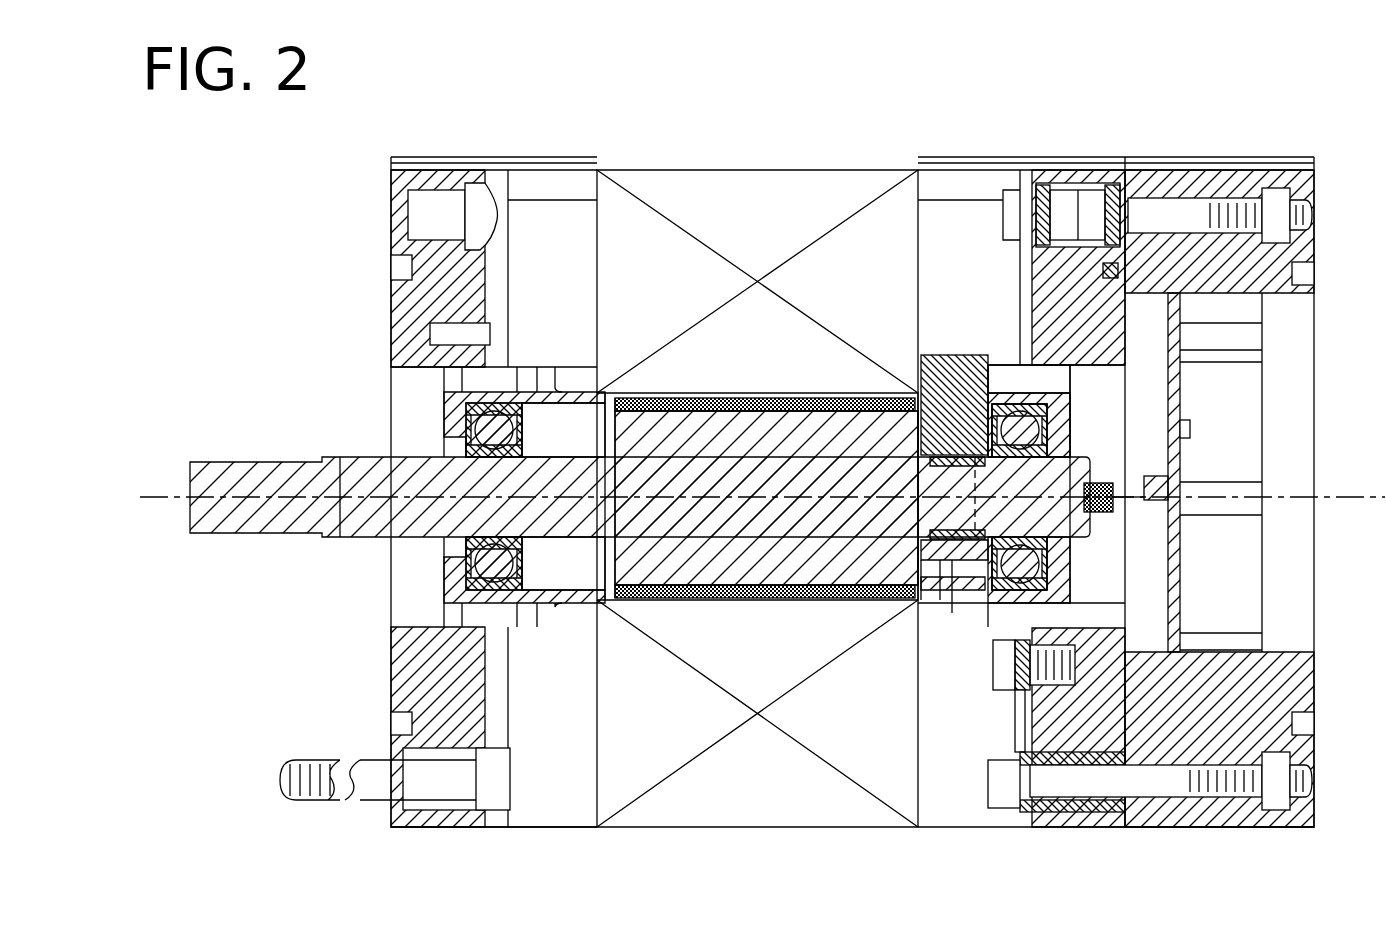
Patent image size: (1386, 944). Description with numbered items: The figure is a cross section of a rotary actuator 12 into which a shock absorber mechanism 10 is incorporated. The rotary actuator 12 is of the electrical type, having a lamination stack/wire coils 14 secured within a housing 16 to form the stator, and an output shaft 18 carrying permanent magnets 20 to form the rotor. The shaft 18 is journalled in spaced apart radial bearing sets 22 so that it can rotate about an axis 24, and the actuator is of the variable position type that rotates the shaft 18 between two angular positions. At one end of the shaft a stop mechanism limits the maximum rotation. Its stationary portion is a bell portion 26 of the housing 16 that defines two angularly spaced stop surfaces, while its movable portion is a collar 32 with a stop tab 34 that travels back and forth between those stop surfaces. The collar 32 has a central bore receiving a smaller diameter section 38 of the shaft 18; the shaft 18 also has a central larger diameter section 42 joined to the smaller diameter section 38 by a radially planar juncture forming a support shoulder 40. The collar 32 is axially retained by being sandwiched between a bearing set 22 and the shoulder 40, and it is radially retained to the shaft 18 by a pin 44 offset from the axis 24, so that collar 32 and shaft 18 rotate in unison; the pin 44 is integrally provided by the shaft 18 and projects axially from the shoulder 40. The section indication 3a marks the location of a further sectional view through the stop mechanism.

The shock absorber mechanism 10 is at (918, 387).
The rotary actuator 12 is at (290, 264).
The lamination stack/wire coils 14 is at (692, 185).
The housing 16 is at (390, 318).
The output shaft 18 is at (234, 466).
The permanent magnets 20 is at (735, 600).
The radial bearing sets 22 is at (492, 565).
The axis 24 is at (150, 493).
The bell portion 26 is at (1015, 393).
The collar 32 is at (948, 605).
The stop tab 34 is at (965, 355).
The smaller diameter section 38 is at (1088, 472).
The support shoulder 40 is at (797, 400).
The central larger diameter section 42 is at (830, 545).
The pin 44 is at (952, 568).
The section line 3a is at (975, 355).